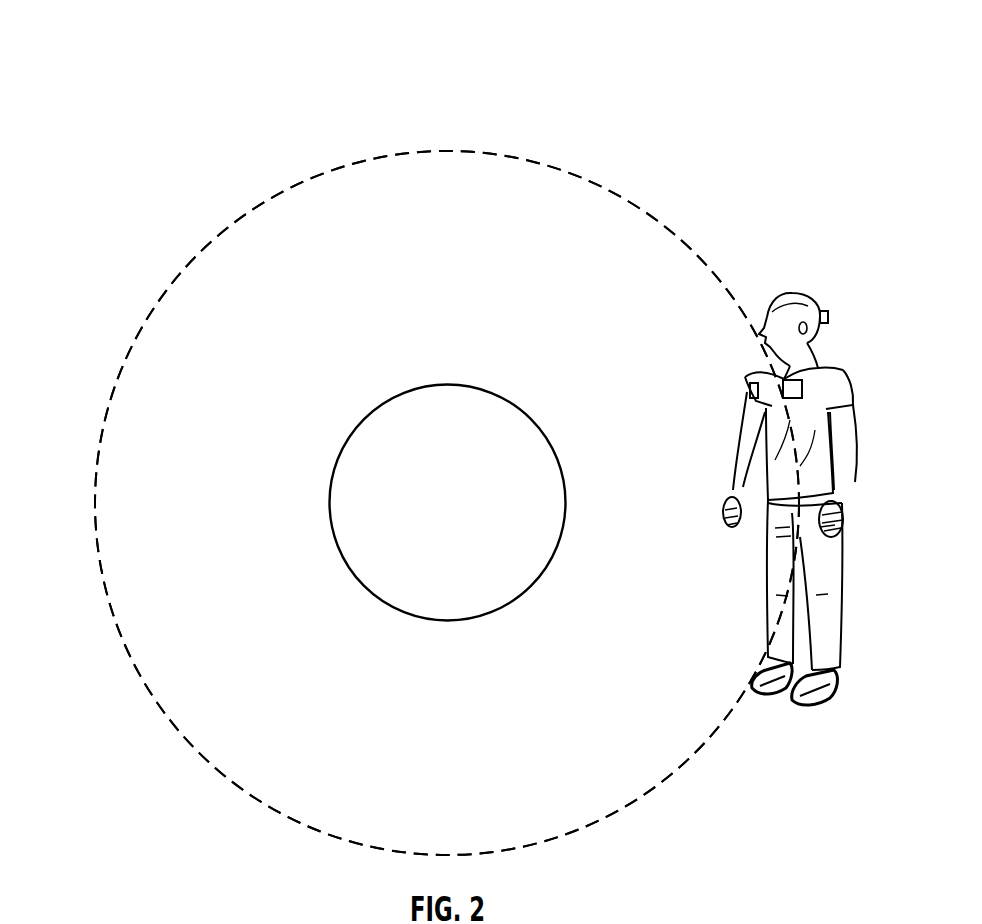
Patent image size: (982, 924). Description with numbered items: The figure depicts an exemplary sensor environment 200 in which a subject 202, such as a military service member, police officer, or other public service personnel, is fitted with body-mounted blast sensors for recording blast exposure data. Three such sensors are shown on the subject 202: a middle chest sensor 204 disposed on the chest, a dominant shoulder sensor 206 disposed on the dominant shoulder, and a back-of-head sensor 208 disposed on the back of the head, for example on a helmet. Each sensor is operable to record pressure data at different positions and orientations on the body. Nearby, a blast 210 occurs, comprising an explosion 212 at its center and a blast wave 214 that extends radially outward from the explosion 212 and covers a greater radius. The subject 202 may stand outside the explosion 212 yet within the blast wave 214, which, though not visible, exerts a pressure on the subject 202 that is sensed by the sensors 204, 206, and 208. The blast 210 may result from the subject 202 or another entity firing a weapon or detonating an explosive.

The sensor environment 200 is at (121, 50).
The subject 202 is at (847, 699).
The middle chest sensor 204 is at (803, 386).
The dominant shoulder sensor 206 is at (752, 382).
The back-of-head sensor 208 is at (828, 315).
The blast 210 is at (113, 646).
The explosion 212 is at (448, 385).
The blast wave 214 is at (637, 207).